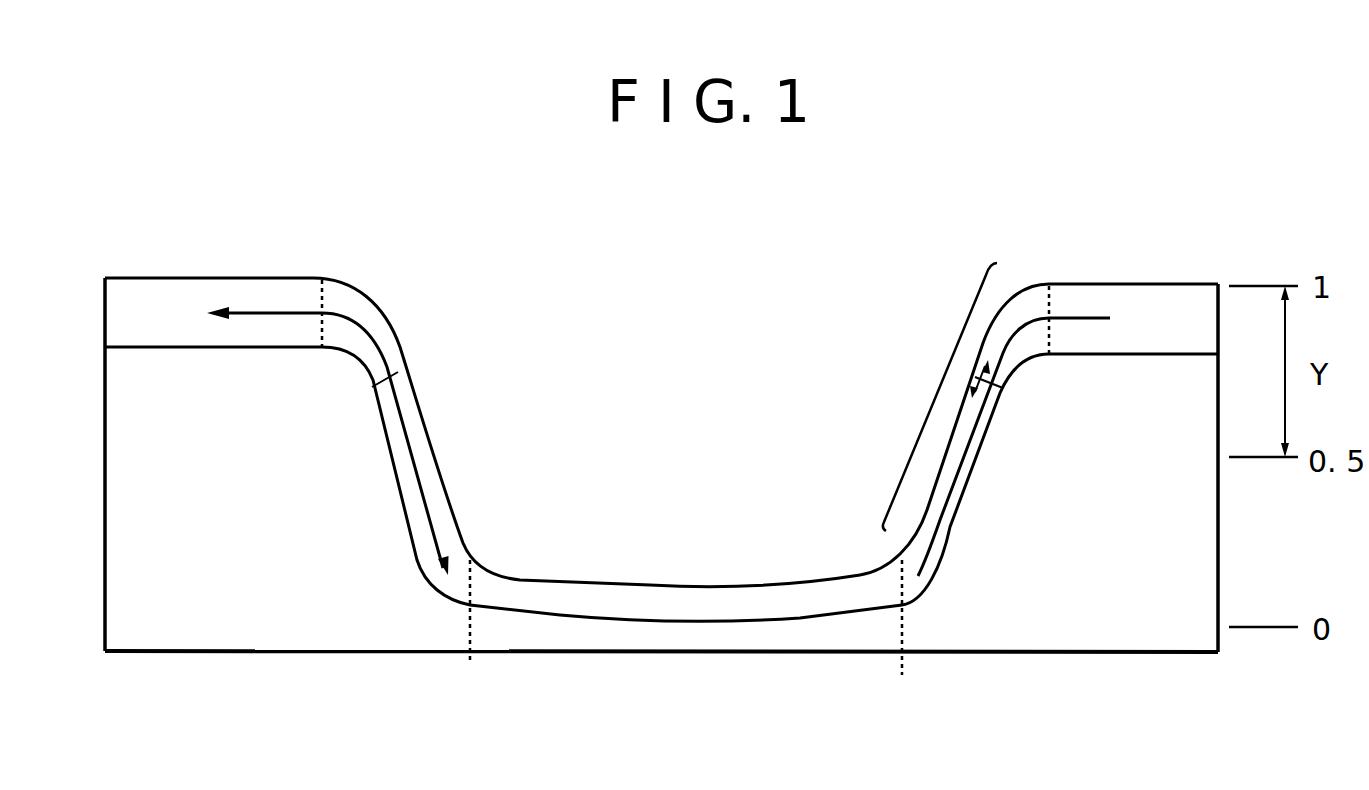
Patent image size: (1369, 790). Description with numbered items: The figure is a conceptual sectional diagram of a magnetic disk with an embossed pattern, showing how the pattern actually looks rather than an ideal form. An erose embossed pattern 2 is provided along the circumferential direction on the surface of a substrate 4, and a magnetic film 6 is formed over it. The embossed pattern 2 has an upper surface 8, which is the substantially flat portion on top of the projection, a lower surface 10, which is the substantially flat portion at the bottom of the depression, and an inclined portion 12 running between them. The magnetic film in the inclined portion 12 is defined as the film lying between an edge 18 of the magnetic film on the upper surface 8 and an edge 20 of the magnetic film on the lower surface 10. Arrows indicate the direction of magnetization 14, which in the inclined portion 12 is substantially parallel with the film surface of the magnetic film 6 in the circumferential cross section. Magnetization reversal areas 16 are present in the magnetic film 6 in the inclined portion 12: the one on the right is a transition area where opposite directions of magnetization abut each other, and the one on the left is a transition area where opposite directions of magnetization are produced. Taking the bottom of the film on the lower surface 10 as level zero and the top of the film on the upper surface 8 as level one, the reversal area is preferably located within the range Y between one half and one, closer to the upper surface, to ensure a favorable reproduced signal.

The embossed pattern 2 is at (115, 418).
The substrate 4 is at (112, 534).
The magnetic film 6 is at (105, 316).
The upper surface 8 is at (173, 278).
The lower surface 10 is at (645, 598).
The inclined portion 12 is at (943, 393).
The magnetization 14 is at (421, 423).
The magnetization reversal area 16 is at (368, 390).
The edge of the magnetic film on the upper surface 18 is at (322, 350).
The edge of the magnetic film on the lower surface 20 is at (684, 635).